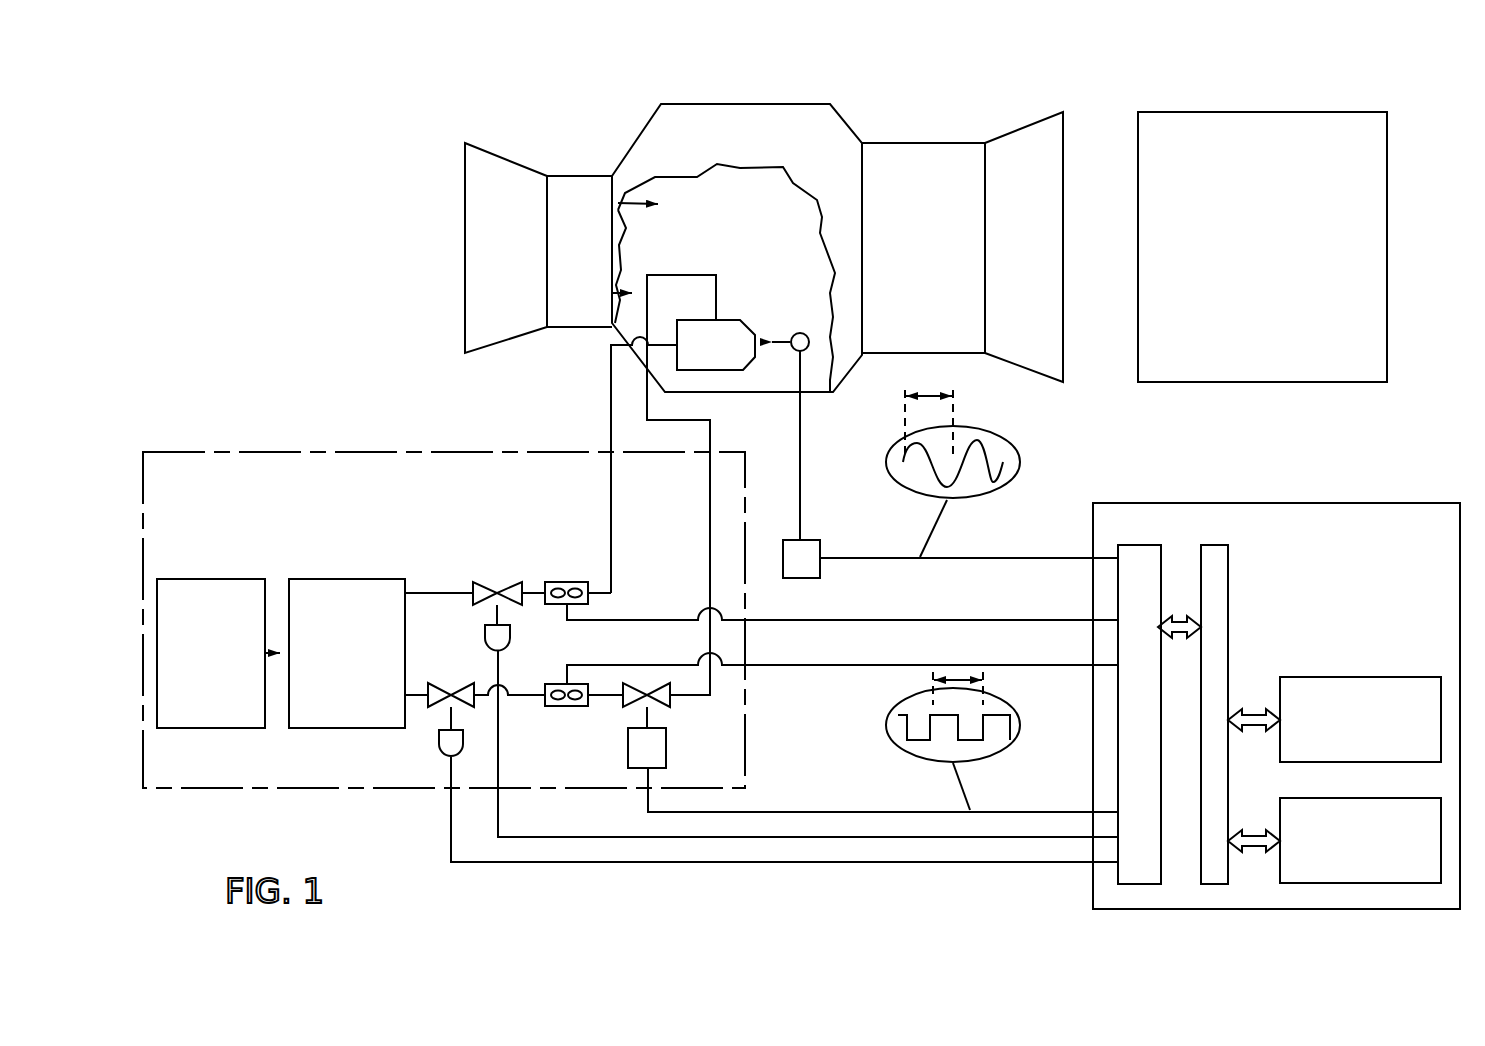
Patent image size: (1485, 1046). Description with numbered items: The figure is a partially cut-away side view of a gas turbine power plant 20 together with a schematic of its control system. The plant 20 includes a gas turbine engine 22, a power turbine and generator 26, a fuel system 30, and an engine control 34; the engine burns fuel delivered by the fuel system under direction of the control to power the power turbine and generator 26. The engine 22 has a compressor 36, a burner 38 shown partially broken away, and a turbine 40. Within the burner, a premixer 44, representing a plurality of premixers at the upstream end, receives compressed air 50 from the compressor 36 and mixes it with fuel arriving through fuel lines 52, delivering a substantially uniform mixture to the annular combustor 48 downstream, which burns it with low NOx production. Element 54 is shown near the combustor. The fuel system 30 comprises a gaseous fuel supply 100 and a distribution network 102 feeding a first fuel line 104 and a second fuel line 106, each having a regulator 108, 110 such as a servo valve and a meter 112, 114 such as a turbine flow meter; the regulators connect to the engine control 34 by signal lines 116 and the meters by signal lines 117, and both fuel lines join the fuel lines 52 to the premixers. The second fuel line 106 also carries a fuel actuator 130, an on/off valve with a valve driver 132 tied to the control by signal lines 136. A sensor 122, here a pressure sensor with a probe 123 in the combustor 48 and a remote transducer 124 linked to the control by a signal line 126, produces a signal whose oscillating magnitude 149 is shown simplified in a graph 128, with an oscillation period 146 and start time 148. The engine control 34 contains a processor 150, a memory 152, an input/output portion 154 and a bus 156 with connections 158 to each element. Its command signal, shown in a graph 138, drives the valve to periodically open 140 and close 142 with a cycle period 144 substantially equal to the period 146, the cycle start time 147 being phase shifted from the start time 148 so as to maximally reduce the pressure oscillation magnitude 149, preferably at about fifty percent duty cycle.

The gas turbine power plant 20 is at (1412, 127).
The gas turbine engine 22 is at (806, 100).
The power turbine and generator 26 is at (1236, 96).
The fuel system 30 is at (446, 443).
The engine control 34 is at (1312, 494).
The compressor 36 is at (518, 160).
The burner 38 is at (702, 103).
The turbine 40 is at (912, 143).
The premixer 44 is at (727, 318).
The combustor 48 is at (780, 250).
The compressed air 50 is at (622, 282).
The fuel lines 52 is at (590, 404).
The pressure sensor 54 is at (769, 326).
The gaseous fuel supply 100 is at (195, 579).
The distribution network 102 is at (362, 579).
The first fuel line 104 is at (460, 572).
The second fuel line 106 is at (425, 722).
The regulator 108 is at (485, 583).
The regulator 110 is at (441, 686).
The meter 112 is at (567, 580).
The meter 114 is at (565, 706).
The signal lines 116 is at (910, 862).
The signal lines 117 is at (884, 665).
The sensor 122 is at (818, 432).
The probe 123 is at (798, 352).
The remote transducer 124 is at (815, 540).
The signal line 126 is at (1000, 557).
The graph 128 is at (990, 418).
The fuel actuator 130 is at (676, 709).
The valve driver 132 is at (667, 758).
The signal lines 136 is at (806, 812).
The graph 138 is at (876, 716).
The open command 140 is at (1000, 705).
The close command 142 is at (968, 742).
The period of on/off cycle 144 is at (972, 678).
The period of pressure oscillation 146 is at (925, 395).
The start time of on/off cycle 147 is at (932, 674).
The start time of pressure oscillations 148 is at (903, 393).
The magnitude of pressure oscillations 149 is at (1005, 437).
The processor 150 is at (1338, 677).
The memory 152 is at (1338, 798).
The input/output portion 154 is at (1131, 545).
The bus 156 is at (1219, 613).
The connections 158 is at (1185, 633).